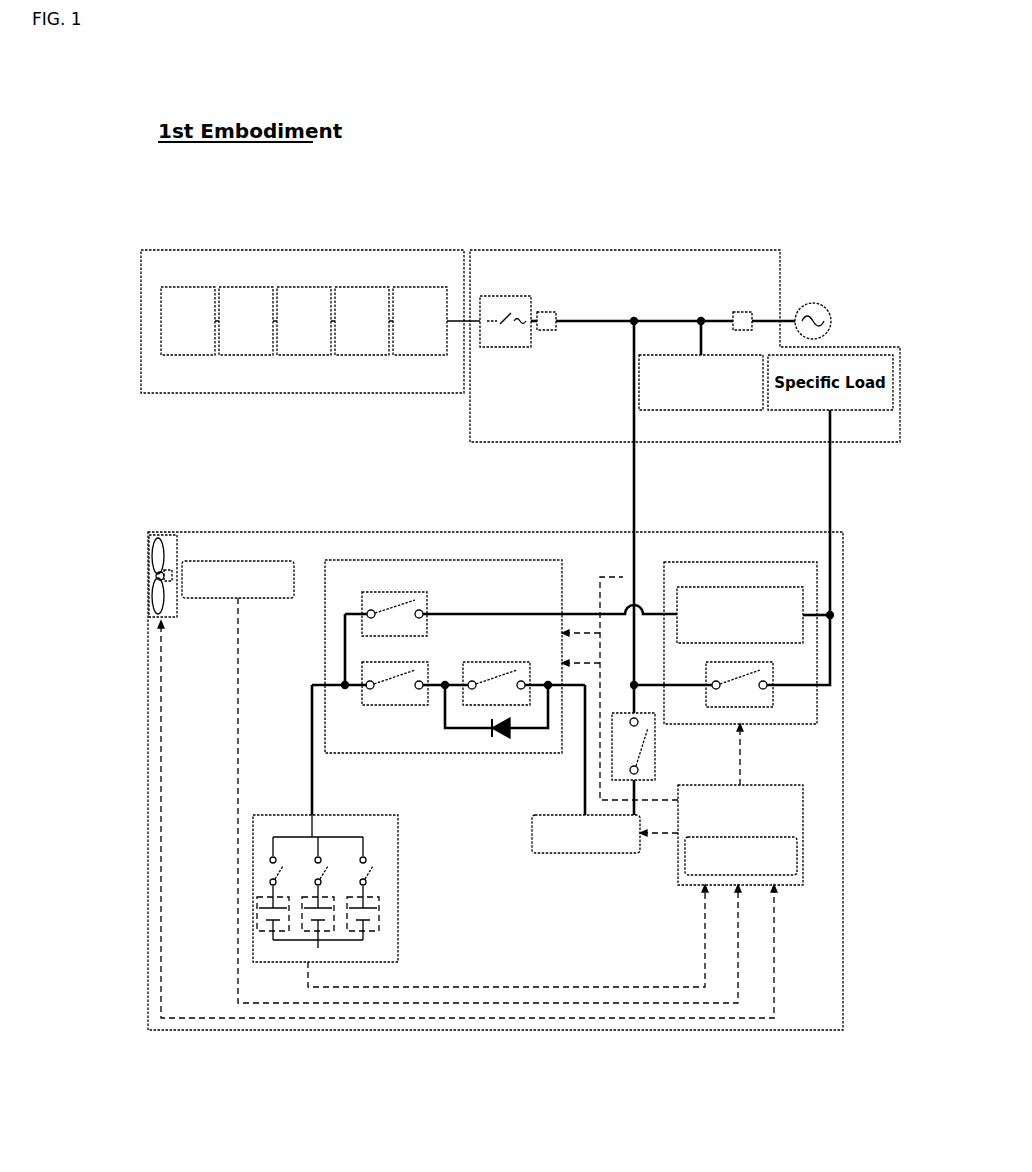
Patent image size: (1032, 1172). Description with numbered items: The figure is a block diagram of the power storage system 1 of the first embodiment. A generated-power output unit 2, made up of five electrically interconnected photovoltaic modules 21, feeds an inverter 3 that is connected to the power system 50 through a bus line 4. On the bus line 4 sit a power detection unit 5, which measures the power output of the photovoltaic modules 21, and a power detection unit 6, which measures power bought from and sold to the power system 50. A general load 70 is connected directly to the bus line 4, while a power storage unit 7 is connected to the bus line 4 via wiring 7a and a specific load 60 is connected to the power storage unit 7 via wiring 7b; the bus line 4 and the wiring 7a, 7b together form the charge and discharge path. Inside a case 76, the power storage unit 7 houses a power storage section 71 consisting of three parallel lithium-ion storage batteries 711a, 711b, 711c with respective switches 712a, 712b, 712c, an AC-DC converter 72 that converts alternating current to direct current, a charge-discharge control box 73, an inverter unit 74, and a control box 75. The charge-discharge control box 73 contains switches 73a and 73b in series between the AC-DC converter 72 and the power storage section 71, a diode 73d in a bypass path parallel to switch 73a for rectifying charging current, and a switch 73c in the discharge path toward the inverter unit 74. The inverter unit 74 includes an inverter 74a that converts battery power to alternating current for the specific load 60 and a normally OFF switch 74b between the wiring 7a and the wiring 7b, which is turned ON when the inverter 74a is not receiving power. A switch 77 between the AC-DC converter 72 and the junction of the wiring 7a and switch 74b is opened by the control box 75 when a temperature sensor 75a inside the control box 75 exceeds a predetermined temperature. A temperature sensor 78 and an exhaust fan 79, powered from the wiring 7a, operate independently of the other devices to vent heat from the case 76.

The power storage system 1 is at (782, 151).
The generated-power output unit 2 is at (158, 250).
The photovoltaic module 21 is at (190, 287).
The inverter 3 is at (505, 296).
The bus line 4 is at (770, 318).
The power detection unit 5 is at (546, 312).
The power detection unit 6 is at (740, 312).
The power system 50 is at (813, 303).
The specific load 60 is at (876, 414).
The general load 70 is at (700, 412).
The power storage unit 7 is at (845, 534).
The case 76 is at (495, 781).
The wiring 7a is at (630, 530).
The wiring 7b is at (825, 530).
The power storage section 71 is at (395, 962).
The lithium-ion storage battery 711a is at (268, 945).
The lithium-ion storage battery 711b is at (310, 945).
The lithium-ion storage battery 711c is at (355, 945).
The switch 712a is at (263, 870).
The switch 712b is at (310, 870).
The switch 712c is at (355, 870).
The AC-DC converter 72 is at (585, 855).
The charge-discharge control box 73 is at (345, 560).
The switch 73a is at (506, 662).
The switch 73b is at (414, 662).
The switch 73c is at (390, 592).
The diode 73d is at (500, 736).
The inverter unit 74 is at (817, 640).
The inverter 74a is at (803, 600).
The switch 74b is at (765, 708).
The control box 75 is at (803, 790).
The temperature sensor 75a is at (797, 860).
The switch 77 is at (620, 713).
The temperature sensor 78 is at (236, 561).
The exhaust fan 79 is at (177, 550).